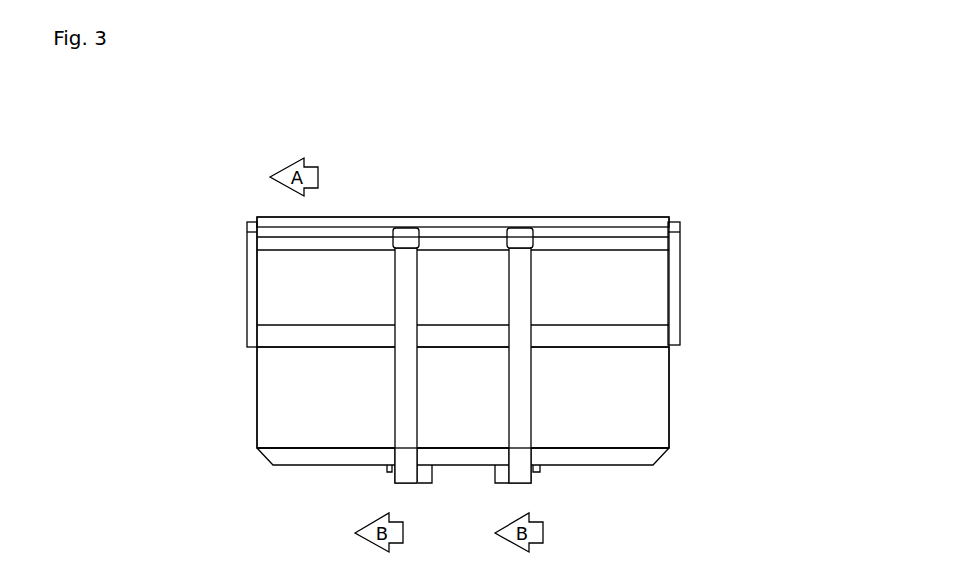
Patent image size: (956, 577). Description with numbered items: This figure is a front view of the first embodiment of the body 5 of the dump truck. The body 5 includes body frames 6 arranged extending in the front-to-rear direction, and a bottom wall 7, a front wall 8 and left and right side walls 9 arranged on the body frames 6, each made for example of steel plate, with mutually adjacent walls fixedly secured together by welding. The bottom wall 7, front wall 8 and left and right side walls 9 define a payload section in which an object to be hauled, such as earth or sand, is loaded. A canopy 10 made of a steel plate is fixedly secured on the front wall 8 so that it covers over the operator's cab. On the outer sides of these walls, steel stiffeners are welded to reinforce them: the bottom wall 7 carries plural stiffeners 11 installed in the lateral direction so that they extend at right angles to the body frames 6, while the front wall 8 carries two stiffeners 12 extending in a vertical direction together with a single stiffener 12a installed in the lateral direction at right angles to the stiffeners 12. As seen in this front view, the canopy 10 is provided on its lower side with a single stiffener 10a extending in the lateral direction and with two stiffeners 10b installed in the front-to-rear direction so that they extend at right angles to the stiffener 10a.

The body 5 is at (632, 212).
The body frames 6 is at (410, 483).
The bottom wall 7 is at (583, 450).
The front wall 8 is at (615, 395).
The left and right side walls 9 is at (257, 280).
The canopy 10 is at (438, 218).
The stiffener 10a is at (578, 238).
The stiffeners 10b is at (521, 228).
The stiffeners 11 is at (632, 465).
The stiffeners 12 is at (520, 287).
The stiffener 12a is at (618, 333).